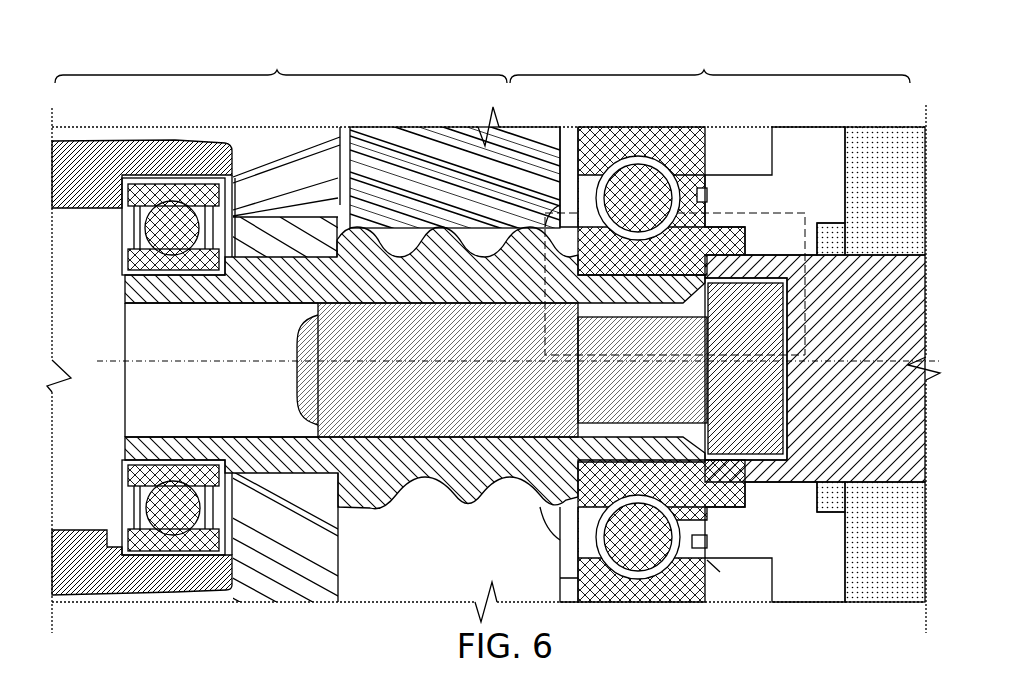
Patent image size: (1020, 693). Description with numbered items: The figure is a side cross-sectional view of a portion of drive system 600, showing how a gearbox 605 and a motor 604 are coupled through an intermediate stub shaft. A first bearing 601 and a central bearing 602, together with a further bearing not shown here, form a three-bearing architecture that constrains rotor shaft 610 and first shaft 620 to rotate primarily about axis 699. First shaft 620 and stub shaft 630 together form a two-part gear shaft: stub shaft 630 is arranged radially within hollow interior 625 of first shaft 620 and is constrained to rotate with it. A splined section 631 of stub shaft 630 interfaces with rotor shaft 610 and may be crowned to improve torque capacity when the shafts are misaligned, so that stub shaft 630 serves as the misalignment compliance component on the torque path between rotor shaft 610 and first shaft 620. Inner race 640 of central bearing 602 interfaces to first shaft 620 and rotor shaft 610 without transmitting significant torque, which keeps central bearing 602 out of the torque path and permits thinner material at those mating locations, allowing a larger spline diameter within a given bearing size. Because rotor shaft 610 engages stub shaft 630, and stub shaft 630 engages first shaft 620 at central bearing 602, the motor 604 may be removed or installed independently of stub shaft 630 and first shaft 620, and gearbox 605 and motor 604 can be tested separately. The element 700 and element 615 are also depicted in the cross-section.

The drive system 600 is at (76, 49).
The gearbox 605 is at (281, 357).
The motor 604 is at (710, 324).
The first bearing 601 is at (191, 208).
The central bearing 602 is at (645, 192).
The inner race 640 is at (735, 225).
The coupling sleeve 700 is at (774, 215).
The housing end wall 615 is at (874, 204).
The section 631 is at (404, 177).
The first shaft 620 is at (349, 297).
The hollow interior 625 is at (193, 351).
The stub shaft 630 is at (435, 394).
The rotor shaft 610 is at (833, 319).
The axis 699 is at (108, 360).